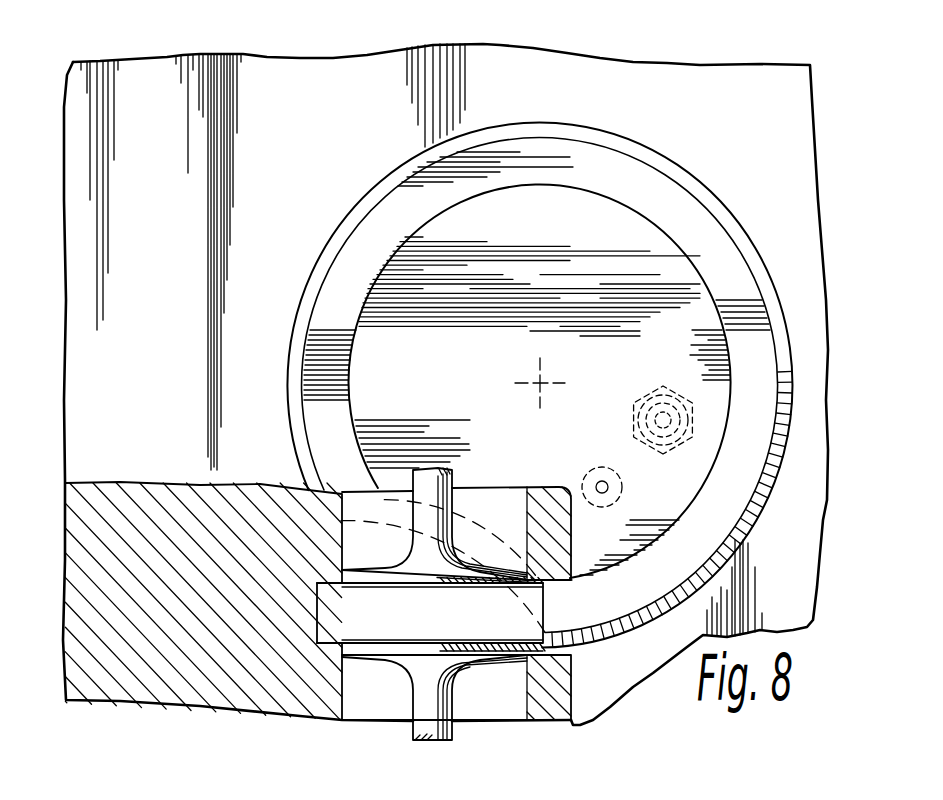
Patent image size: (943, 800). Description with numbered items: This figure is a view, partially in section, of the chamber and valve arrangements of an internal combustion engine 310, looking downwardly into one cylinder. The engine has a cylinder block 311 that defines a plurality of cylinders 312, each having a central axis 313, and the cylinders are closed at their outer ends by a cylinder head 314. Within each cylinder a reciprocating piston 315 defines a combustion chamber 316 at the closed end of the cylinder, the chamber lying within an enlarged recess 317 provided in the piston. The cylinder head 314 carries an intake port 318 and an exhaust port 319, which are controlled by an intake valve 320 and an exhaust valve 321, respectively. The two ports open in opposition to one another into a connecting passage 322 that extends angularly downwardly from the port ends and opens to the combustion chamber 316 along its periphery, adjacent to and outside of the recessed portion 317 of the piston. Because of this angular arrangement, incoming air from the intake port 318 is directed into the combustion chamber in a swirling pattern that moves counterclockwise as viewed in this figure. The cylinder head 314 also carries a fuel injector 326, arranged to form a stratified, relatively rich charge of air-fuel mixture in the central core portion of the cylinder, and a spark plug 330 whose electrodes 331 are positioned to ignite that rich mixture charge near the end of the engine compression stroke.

The internal combustion engine 310 is at (786, 63).
The cylinder block 311 is at (373, 66).
The cylinder 312 is at (688, 178).
The central axis 313 is at (545, 381).
The cylinder head 314 is at (165, 690).
The reciprocating piston 315 is at (541, 146).
The combustion chamber 316 is at (665, 246).
The enlarged recess 317 is at (568, 191).
The intake port 318 is at (507, 497).
The exhaust port 319 is at (572, 667).
The intake valve 320 is at (450, 478).
The exhaust valve 321 is at (428, 703).
The connecting passage 322 is at (528, 600).
The fuel injector 326 is at (608, 483).
The spark plug 330 is at (641, 397).
The electrodes 331 is at (665, 419).